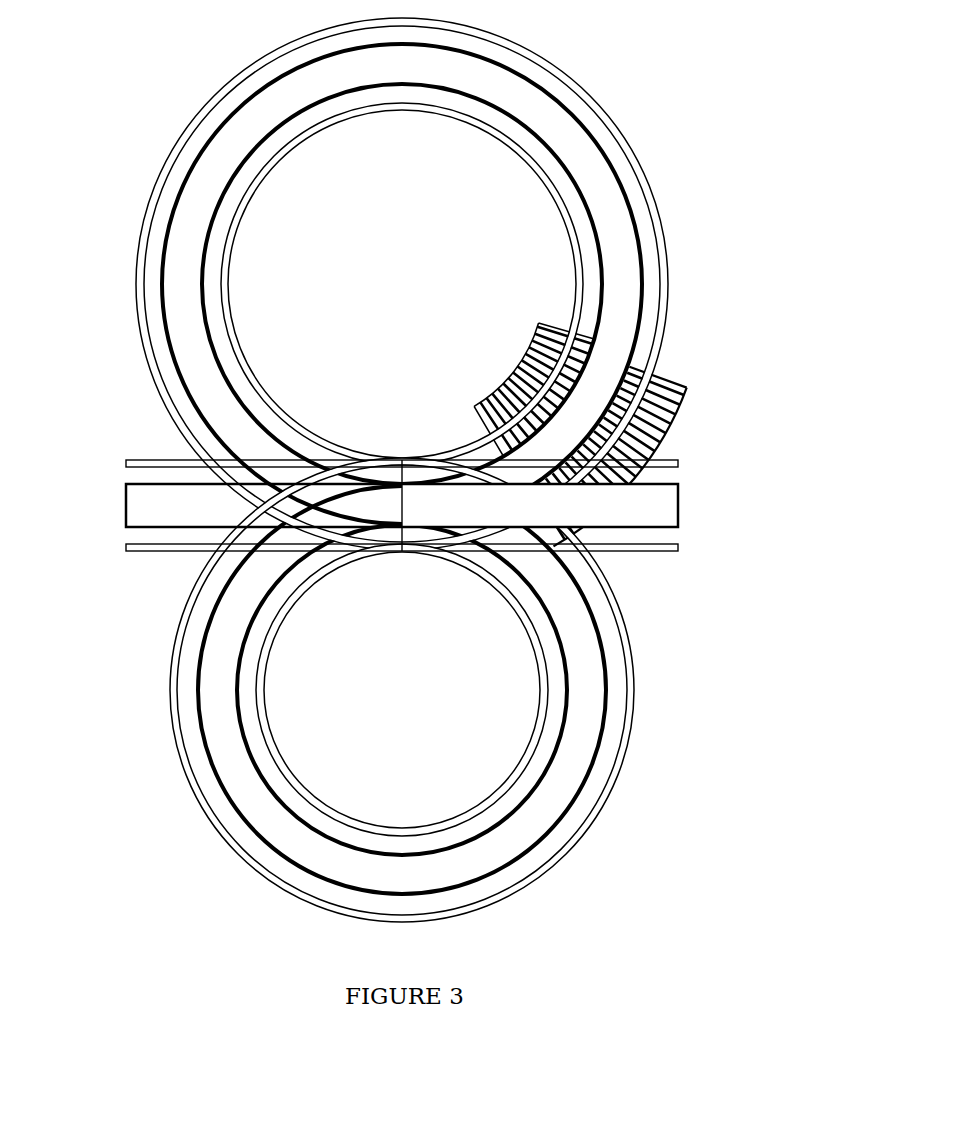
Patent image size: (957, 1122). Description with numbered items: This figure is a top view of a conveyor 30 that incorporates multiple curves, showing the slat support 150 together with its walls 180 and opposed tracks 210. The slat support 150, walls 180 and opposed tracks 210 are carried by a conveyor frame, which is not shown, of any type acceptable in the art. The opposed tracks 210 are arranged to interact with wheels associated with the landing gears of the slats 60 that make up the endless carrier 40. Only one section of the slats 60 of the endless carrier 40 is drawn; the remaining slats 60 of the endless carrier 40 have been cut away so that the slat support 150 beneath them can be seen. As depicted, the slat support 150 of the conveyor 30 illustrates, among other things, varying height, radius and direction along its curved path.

The conveyor 30 is at (438, 470).
The slat support 150 is at (401, 470).
The walls 180 is at (643, 263).
The opposed tracks 210 is at (520, 773).
The endless carrier 40 is at (628, 432).
The slats 60 is at (667, 430).